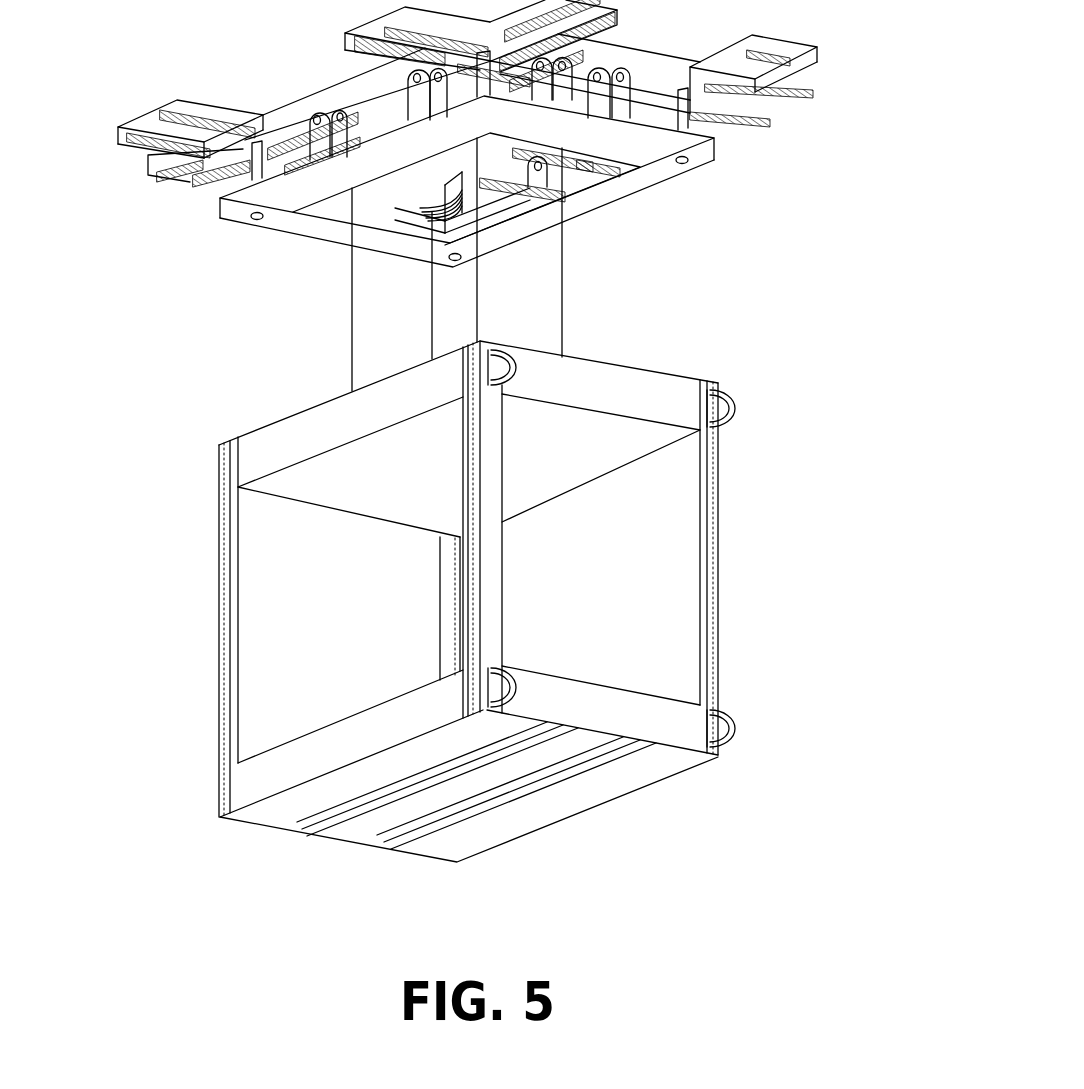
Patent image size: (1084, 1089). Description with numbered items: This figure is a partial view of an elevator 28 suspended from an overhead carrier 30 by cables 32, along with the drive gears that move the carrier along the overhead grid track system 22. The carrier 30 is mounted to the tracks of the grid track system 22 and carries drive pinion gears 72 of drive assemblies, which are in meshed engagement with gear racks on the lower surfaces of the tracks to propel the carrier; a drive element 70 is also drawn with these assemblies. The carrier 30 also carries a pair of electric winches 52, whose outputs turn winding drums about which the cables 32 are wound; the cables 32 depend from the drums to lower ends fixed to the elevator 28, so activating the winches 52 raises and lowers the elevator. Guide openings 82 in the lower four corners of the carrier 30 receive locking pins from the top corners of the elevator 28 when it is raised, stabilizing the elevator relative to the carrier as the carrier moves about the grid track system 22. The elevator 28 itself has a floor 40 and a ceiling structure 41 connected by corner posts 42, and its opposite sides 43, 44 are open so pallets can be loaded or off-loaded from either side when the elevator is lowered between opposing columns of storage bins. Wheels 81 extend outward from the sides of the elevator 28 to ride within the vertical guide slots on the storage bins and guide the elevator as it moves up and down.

The overhead grid track system 22 is at (818, 92).
The elevator 28 is at (452, 580).
The overhead carrier 30 is at (314, 250).
The cables 32 is at (563, 290).
The floor 40 is at (368, 707).
The ceiling structure 41 is at (588, 410).
The corner posts 42 is at (219, 562).
The side 43 is at (640, 702).
The side 44 is at (267, 830).
The electric winch 52 is at (386, 200).
The connector tab 70 is at (598, 74).
The drive pinion gear 72 is at (330, 114).
The wheels 81 is at (505, 350).
The guide openings 82 is at (256, 222).